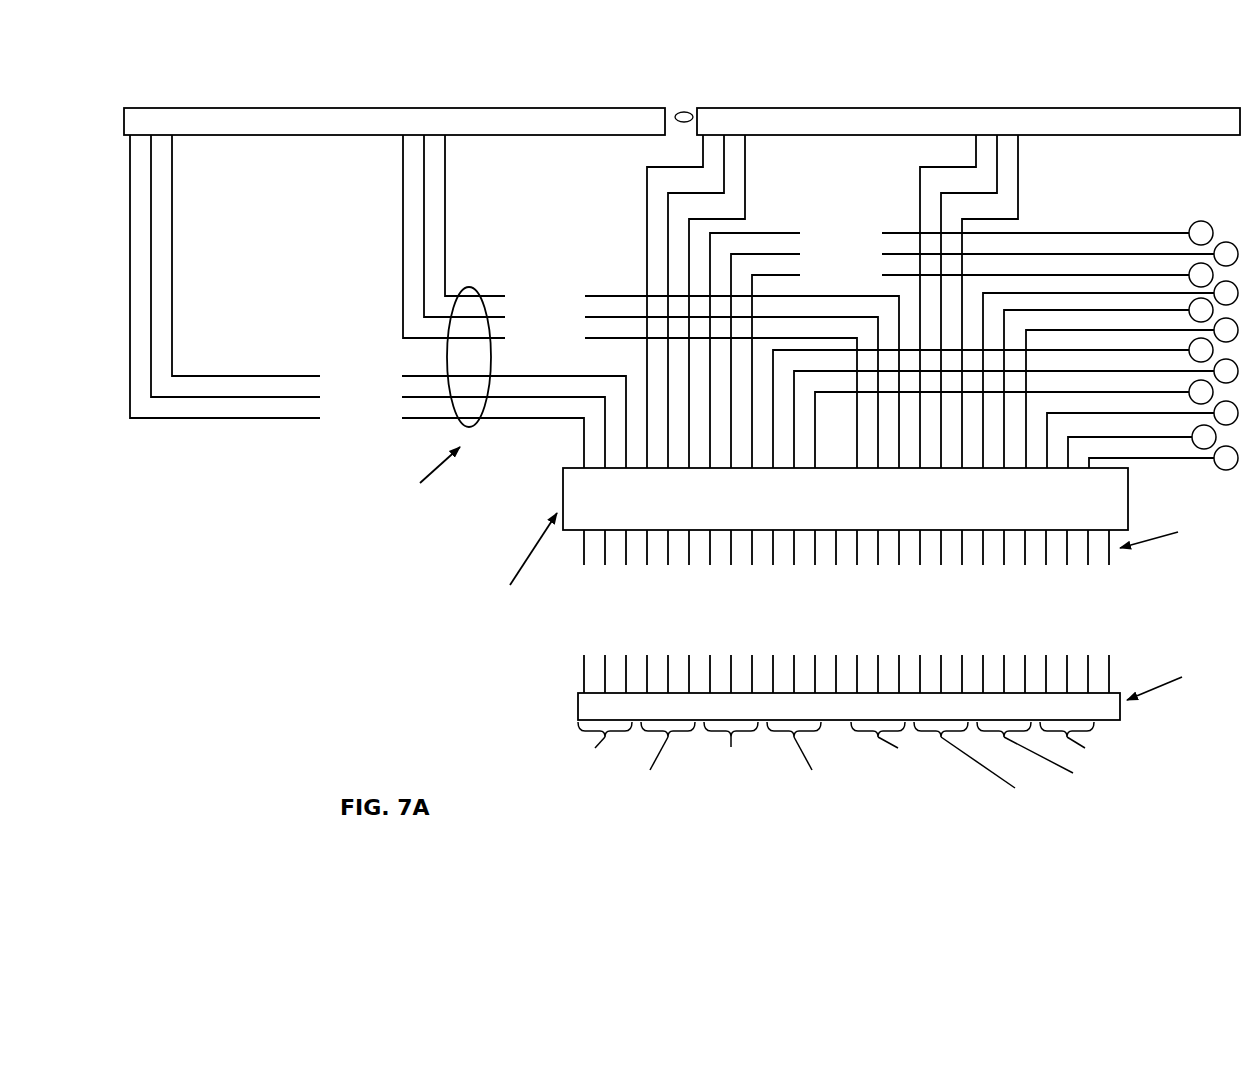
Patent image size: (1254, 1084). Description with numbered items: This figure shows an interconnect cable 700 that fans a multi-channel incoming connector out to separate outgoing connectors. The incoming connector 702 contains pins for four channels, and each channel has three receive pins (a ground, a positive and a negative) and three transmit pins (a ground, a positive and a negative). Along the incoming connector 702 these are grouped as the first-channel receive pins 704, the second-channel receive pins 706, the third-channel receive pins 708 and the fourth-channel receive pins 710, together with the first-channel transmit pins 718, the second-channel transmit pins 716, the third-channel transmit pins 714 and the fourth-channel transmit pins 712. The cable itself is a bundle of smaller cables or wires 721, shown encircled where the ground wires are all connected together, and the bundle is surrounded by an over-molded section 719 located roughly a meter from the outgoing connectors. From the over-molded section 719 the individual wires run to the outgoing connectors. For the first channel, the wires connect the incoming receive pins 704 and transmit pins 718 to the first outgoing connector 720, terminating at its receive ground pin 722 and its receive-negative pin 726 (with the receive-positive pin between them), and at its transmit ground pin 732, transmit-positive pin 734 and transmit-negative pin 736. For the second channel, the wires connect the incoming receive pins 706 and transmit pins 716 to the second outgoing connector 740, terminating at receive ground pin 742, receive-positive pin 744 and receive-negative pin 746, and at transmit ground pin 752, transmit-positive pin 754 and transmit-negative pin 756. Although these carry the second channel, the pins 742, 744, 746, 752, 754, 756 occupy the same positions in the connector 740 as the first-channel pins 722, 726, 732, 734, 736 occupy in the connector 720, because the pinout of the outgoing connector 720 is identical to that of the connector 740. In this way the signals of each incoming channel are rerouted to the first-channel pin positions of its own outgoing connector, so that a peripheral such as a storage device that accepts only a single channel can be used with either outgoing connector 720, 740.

The cable assembly 700 is at (192, 38).
The incoming connector 702 is at (578, 702).
The channel 0 receive pins 704 is at (513, 757).
The channel 1 receive pins 706 is at (602, 785).
The channel 2 receive pins 708 is at (742, 773).
The channel 3 receive pins 710 is at (888, 783).
The channel 3 transmit pins 712 is at (1213, 745).
The channel 2 transmit pins 714 is at (1200, 777).
The channel 1 transmit pins 716 is at (1098, 802).
The channel 0 transmit pins 718 is at (935, 772).
The over-molded section 719 is at (563, 485).
The first outgoing connector 720 is at (123, 114).
The SATA or SAS cable 721 is at (465, 425).
The GND pin 722 is at (130, 107).
The RX0− pin 726 is at (152, 107).
The GND pin 732 is at (405, 107).
The TX0+ pin 734 is at (422, 108).
The TX0− pin 736 is at (447, 108).
The second outgoing connector 740 is at (697, 108).
The GND pin 742 is at (703, 108).
The RX1+ pin 744 is at (725, 108).
The RX1− pin 746 is at (748, 108).
The GND pin 752 is at (980, 108).
The TX1+ pin 754 is at (995, 108).
The TX1− pin 756 is at (1017, 108).